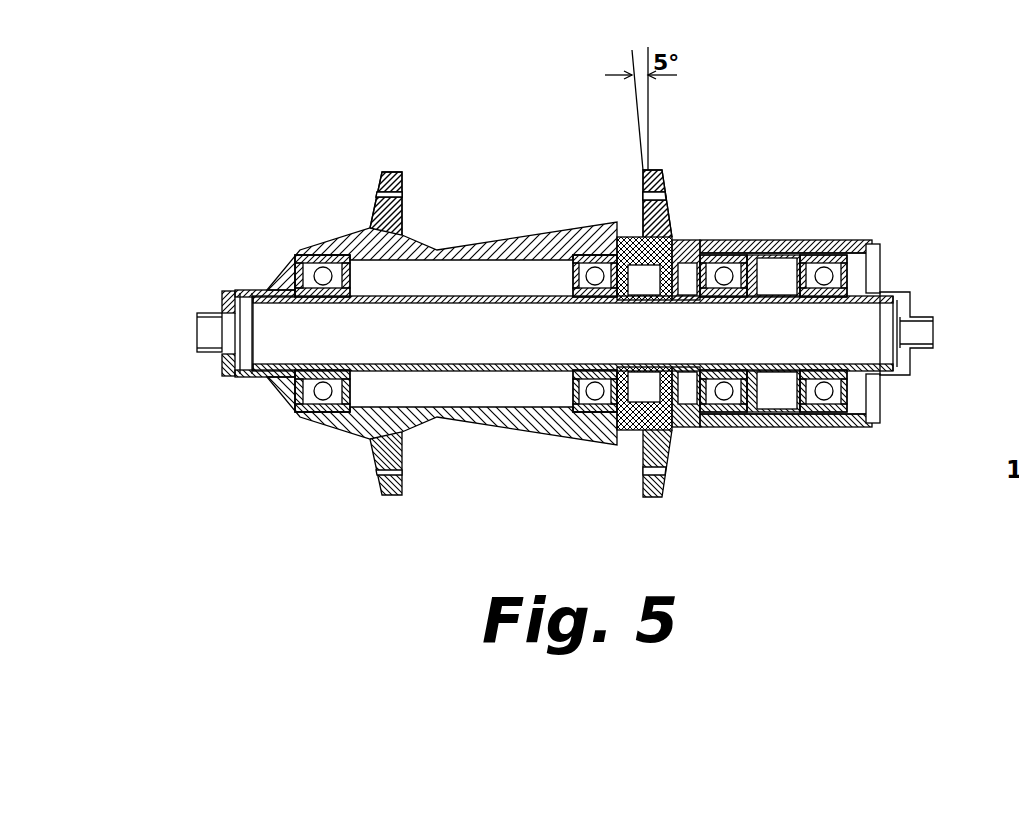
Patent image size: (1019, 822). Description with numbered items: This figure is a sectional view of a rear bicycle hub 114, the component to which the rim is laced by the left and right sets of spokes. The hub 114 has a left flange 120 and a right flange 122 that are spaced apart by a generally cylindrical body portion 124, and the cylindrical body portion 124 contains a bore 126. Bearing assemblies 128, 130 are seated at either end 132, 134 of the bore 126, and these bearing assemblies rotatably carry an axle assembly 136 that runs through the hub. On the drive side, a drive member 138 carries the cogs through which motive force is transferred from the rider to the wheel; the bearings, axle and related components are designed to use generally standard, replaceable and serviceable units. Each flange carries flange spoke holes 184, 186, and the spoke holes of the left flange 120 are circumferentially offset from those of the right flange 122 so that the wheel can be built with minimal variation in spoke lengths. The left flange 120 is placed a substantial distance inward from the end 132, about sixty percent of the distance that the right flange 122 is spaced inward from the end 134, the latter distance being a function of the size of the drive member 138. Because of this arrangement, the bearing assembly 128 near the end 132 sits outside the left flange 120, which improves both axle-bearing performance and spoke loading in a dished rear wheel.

The hub 114 is at (704, 372).
The left flange 120 is at (364, 165).
The right flange 122 is at (694, 166).
The cylindrical body portion 124 is at (442, 229).
The bore 126 is at (442, 444).
The bearing assembly 128 is at (289, 352).
The bearing assembly 130 is at (578, 362).
The end 132 is at (226, 374).
The end 134 is at (921, 378).
The axle assembly 136 is at (630, 318).
The drive member 138 is at (790, 310).
The flange spoke hole 184 is at (342, 348).
The flange spoke hole 186 is at (720, 359).